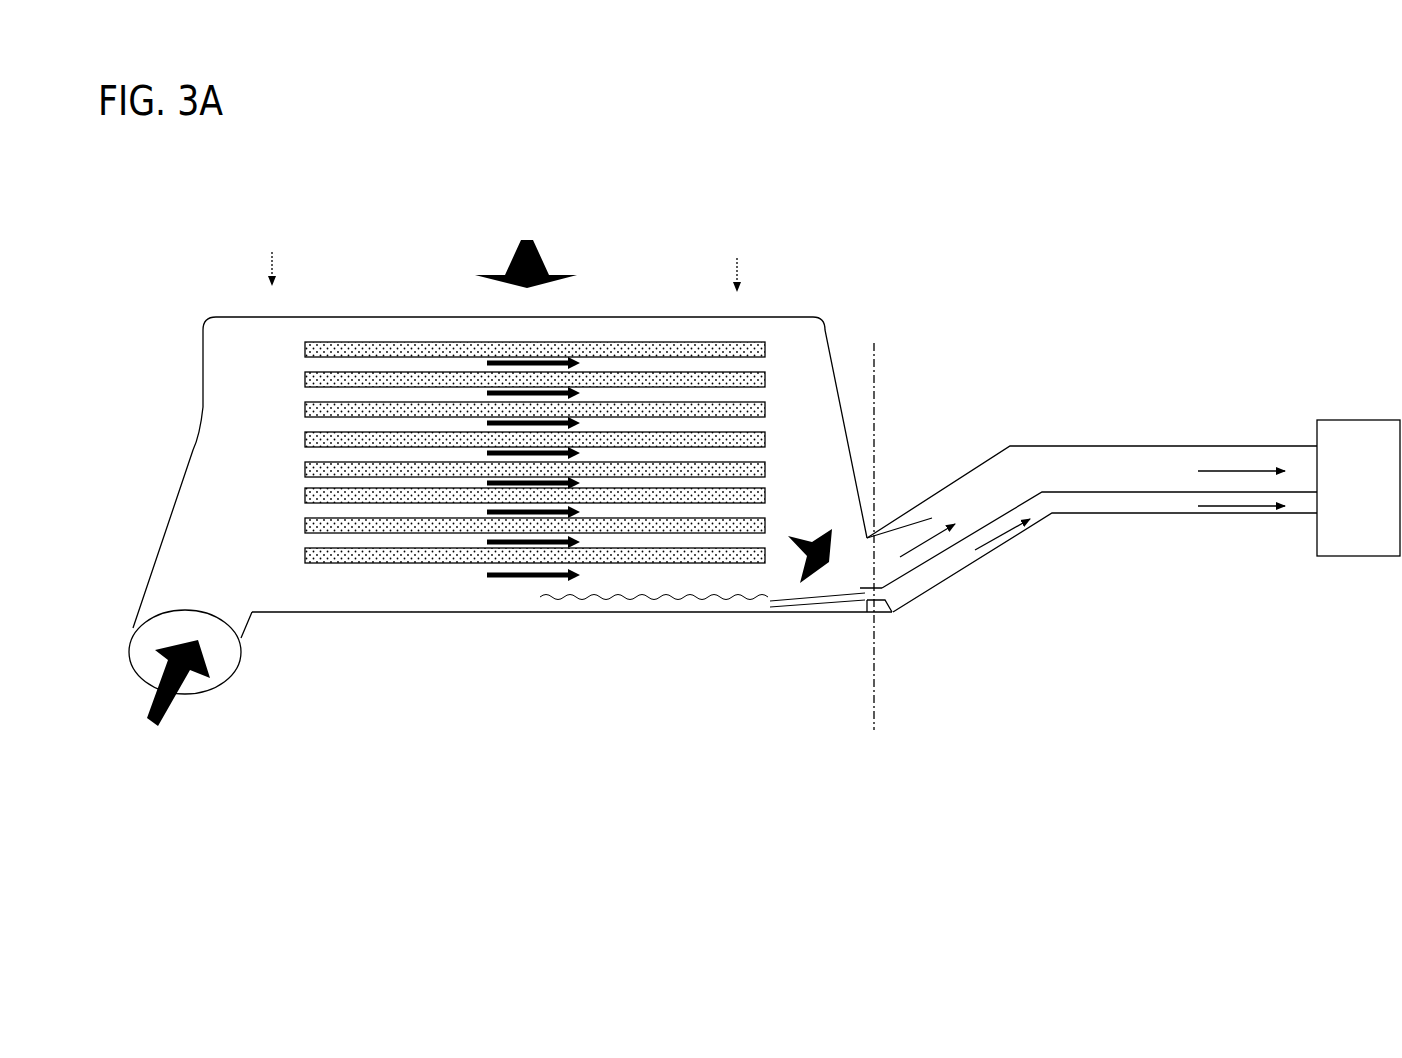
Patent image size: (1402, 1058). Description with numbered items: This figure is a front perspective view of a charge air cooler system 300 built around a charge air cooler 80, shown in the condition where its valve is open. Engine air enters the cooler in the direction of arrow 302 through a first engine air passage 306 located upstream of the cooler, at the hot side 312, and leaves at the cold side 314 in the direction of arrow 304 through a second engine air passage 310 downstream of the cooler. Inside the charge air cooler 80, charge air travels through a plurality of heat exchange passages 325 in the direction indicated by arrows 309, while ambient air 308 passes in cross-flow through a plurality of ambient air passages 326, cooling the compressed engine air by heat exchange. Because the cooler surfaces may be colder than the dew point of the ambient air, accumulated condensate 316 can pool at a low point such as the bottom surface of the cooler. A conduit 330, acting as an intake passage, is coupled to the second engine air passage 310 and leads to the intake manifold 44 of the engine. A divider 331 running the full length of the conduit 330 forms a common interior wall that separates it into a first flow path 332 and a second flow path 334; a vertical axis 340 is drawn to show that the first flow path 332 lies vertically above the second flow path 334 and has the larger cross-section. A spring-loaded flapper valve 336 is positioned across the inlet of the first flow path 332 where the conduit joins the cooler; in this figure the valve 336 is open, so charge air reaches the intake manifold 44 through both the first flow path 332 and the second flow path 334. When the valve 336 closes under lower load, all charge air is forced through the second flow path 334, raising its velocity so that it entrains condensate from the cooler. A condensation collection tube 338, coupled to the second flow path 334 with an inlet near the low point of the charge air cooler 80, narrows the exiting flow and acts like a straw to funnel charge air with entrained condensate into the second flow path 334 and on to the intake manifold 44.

The charge air cooler 80 is at (370, 317).
The charge air cooler system 300 is at (942, 176).
The arrow indicating engine airflow entering charge air cooler 302 is at (152, 717).
The arrow indicating engine airflow exiting charge air cooler 304 is at (830, 532).
The first engine air passage 306 is at (207, 593).
The ambient air 308 is at (490, 276).
The arrows indicating charge air flow direction 309 is at (472, 472).
The second engine air passage 310 is at (834, 583).
The hot side 312 is at (272, 257).
The cold side 314 is at (737, 264).
The accumulated condensate 316 is at (660, 598).
The heat exchange passages 325 is at (302, 540).
The ambient air passages 326 is at (305, 437).
The conduit 330 is at (1053, 446).
The divider 331 is at (983, 527).
The first flow path 332 is at (1071, 481).
The second flow path 334 is at (1071, 513).
The valve 336 is at (898, 527).
The condensation collection tube 338 is at (864, 604).
The vertical axis 340 is at (875, 396).
The intake manifold 44 is at (1347, 499).